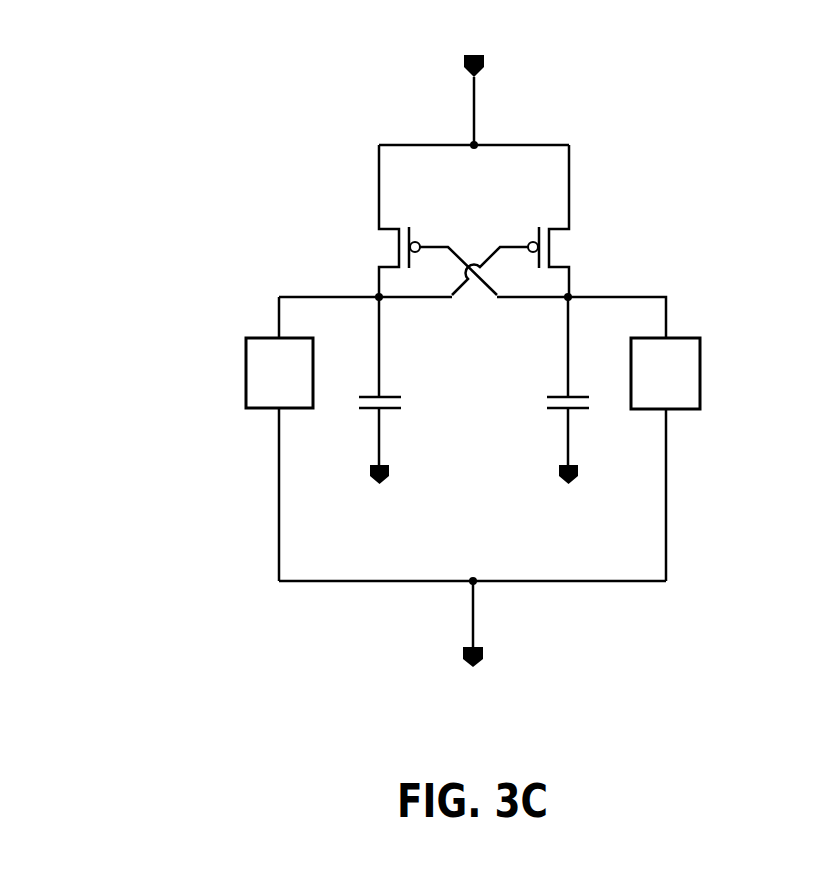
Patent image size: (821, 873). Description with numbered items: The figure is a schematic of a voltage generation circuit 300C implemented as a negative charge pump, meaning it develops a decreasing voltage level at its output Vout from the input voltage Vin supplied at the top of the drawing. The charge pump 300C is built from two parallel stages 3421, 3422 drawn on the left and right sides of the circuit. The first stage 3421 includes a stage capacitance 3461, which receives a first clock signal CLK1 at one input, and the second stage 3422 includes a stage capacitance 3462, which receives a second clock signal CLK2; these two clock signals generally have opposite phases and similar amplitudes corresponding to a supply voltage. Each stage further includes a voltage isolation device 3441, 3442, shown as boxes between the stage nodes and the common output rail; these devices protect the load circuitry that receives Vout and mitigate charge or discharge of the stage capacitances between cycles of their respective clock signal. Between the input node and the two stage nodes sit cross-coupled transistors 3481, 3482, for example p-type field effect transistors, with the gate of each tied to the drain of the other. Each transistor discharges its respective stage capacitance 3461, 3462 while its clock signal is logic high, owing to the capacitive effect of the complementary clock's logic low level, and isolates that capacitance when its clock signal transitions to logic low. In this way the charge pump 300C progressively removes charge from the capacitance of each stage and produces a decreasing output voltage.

The voltage generation circuit 300C is at (220, 124).
The first stage 3421 is at (252, 257).
The second stage 3422 is at (695, 257).
The voltage isolation device 3441 is at (247, 353).
The voltage isolation device 3442 is at (700, 355).
The stage capacitance 3461 is at (385, 395).
The stage capacitance 3462 is at (560, 395).
The cross-coupled transistor 3481 is at (389, 228).
The cross-coupled transistor 3482 is at (558, 228).